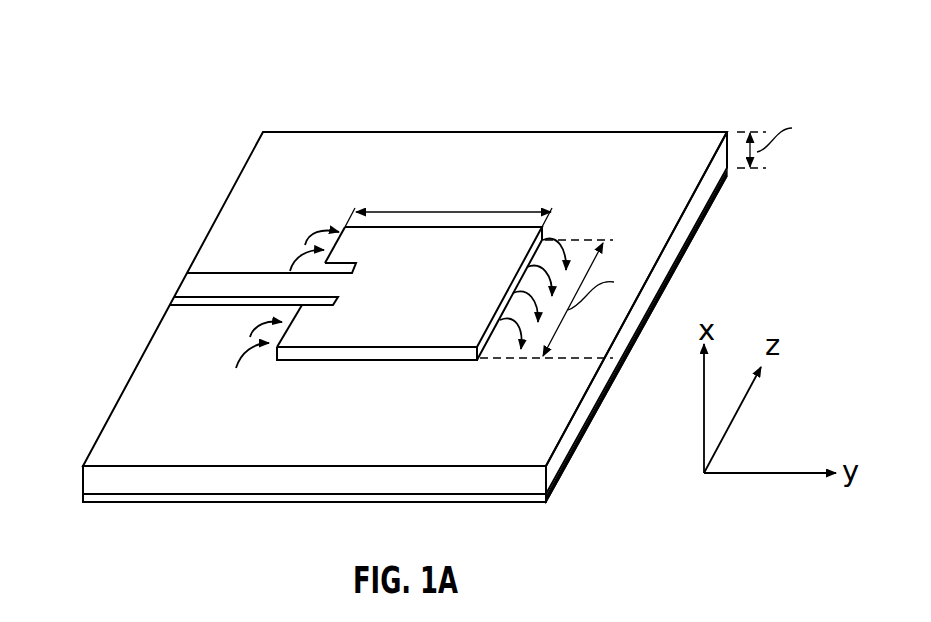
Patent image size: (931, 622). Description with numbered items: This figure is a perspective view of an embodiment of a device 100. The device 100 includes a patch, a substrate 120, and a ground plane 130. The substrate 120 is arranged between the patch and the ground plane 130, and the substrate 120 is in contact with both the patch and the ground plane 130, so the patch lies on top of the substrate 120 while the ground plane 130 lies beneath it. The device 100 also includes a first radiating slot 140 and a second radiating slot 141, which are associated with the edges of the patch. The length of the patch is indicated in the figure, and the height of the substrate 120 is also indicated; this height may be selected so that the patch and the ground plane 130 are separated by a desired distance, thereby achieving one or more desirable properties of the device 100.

The device 100 is at (412, 270).
The substrate 120 is at (134, 400).
The ground plane 130 is at (98, 499).
The first radiating slot 140 is at (271, 352).
The second radiating slot 141 is at (485, 343).